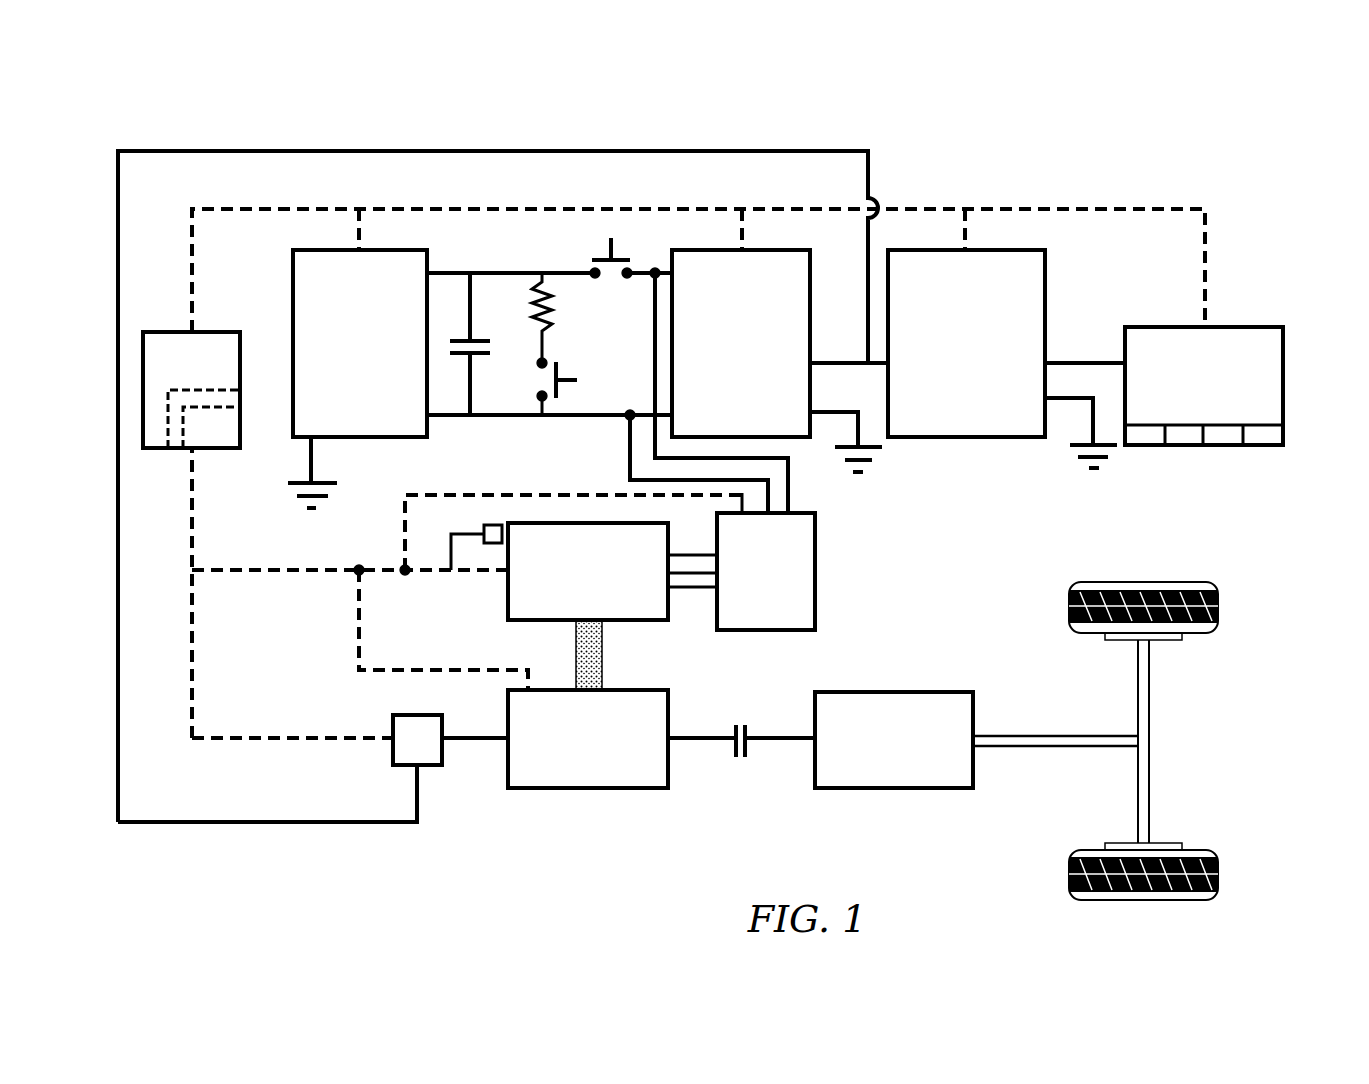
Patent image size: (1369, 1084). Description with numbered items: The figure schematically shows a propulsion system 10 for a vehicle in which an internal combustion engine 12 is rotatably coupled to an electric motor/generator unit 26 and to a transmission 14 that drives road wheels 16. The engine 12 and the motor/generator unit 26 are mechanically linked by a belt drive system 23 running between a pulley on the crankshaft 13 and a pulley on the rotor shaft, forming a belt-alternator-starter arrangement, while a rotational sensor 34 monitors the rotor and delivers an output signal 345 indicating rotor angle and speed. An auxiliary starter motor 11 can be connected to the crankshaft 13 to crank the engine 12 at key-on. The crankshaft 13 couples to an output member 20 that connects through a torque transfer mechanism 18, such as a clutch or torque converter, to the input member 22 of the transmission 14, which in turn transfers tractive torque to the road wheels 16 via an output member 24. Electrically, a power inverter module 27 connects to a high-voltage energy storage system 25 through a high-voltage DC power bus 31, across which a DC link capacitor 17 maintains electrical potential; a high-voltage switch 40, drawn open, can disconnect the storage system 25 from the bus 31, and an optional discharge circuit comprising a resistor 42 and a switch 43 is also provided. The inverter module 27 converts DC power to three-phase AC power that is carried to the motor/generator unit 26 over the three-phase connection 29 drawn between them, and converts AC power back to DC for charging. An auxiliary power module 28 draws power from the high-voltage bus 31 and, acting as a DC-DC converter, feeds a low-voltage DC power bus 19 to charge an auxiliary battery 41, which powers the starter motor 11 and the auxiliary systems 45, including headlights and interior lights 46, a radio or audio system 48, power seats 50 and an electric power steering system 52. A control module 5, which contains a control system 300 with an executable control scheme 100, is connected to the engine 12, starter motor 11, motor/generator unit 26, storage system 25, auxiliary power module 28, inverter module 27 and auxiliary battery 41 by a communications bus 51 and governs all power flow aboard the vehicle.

The control module 5 is at (143, 378).
The propulsion system 10 is at (1163, 192).
The auxiliary starter motor 11 is at (393, 725).
The internal combustion engine 12 is at (592, 790).
The crankshaft 13 is at (478, 745).
The transmission 14 is at (905, 692).
The road wheels 16 is at (1218, 605).
The DC link capacitor 17 is at (480, 357).
The torque transfer mechanism 18 is at (748, 726).
The low-voltage DC power bus 19 is at (288, 823).
The output member 20 is at (715, 750).
The input member 22 is at (763, 750).
The belt drive system 23 is at (576, 665).
The output member 24 is at (995, 735).
The high-voltage energy storage system 25 is at (293, 262).
The electric motor/generator unit 26 is at (502, 600).
The power inverter module 27 is at (815, 545).
The auxiliary power module 28 is at (810, 300).
The three-phase cables 29 is at (688, 590).
The high-voltage DC power bus 31 is at (515, 415).
The rotational sensor 34 is at (490, 524).
The high-voltage switch 40 is at (614, 250).
The auxiliary battery 41 is at (1046, 350).
The resistor 42 is at (548, 325).
The switch 43 is at (560, 372).
The auxiliary systems 45 is at (1285, 348).
The headlights and interior lights 46 is at (1145, 447).
The radio or audio system 48 is at (1185, 447).
The power seats 50 is at (1222, 447).
The communications bus 51 is at (240, 209).
The electric power steering system 52 is at (1262, 447).
The control scheme 100 is at (232, 446).
The control system 300 is at (167, 425).
The output signal 345 is at (451, 556).